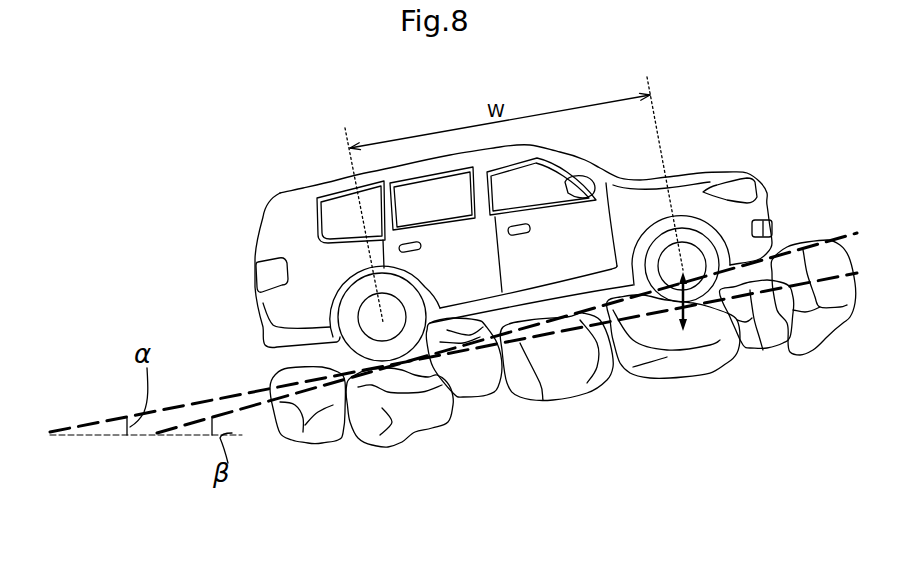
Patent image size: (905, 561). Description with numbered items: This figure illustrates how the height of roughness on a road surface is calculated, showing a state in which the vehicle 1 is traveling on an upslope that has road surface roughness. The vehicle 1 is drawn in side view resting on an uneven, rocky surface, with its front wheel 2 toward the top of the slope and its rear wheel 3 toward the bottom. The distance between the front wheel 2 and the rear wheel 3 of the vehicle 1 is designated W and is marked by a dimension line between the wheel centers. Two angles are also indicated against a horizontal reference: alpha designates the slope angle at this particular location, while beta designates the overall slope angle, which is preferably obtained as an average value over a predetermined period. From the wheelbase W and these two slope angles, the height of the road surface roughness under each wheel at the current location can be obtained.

The vehicle 1 is at (280, 196).
The front wheel 2 is at (670, 265).
The rear wheel 3 is at (370, 320).